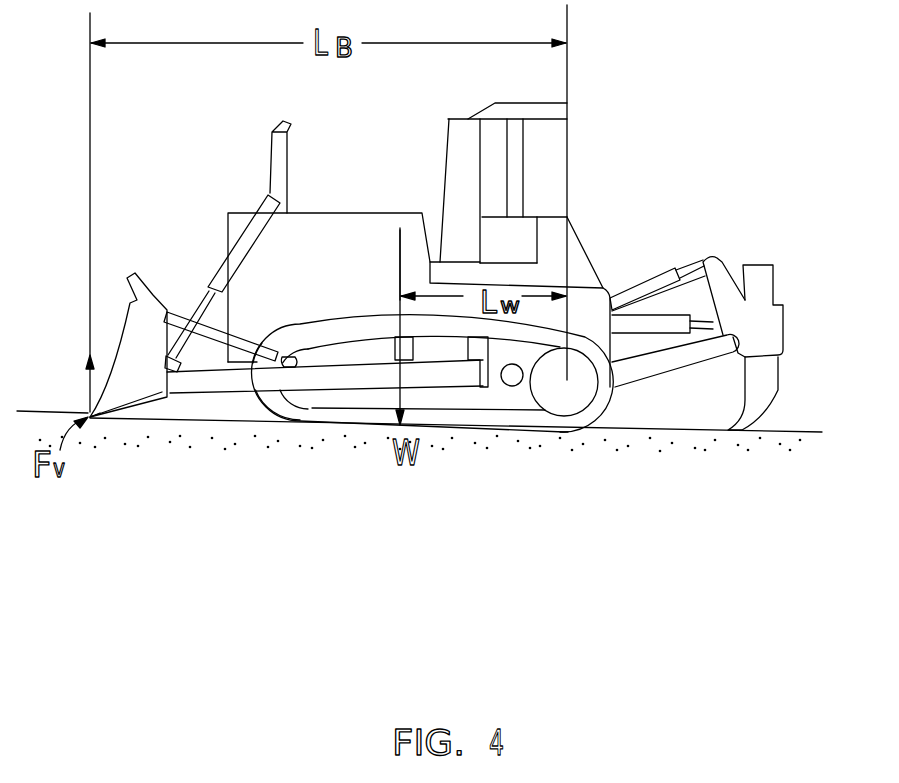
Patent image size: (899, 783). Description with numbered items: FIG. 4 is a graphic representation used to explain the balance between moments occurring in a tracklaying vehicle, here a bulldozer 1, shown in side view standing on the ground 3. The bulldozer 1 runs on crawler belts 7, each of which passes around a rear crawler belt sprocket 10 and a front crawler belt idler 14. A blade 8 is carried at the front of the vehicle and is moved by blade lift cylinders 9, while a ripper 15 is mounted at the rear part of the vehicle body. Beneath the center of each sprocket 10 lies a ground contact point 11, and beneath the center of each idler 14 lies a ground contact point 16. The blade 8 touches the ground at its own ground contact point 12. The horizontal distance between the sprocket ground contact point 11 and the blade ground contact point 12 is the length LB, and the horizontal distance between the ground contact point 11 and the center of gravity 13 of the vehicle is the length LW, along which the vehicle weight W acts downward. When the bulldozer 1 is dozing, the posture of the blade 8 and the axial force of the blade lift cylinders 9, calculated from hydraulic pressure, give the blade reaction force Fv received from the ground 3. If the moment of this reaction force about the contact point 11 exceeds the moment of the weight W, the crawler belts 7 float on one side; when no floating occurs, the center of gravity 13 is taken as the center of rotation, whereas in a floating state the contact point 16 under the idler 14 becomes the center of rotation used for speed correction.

The bulldozer 1 is at (563, 155).
The ground 3 is at (55, 416).
The crawler belt 7 is at (486, 431).
The blade 8 is at (142, 380).
The blade lift cylinder 9 is at (227, 255).
The crawler belt sprocket 10 is at (582, 387).
The ground contact point 11 is at (563, 433).
The ground contact point of the blade 12 is at (92, 425).
The center of gravity 13 is at (398, 293).
The crawler belt idler 14 is at (308, 410).
The ripper 15 is at (765, 288).
The ground contact point 16 is at (318, 423).